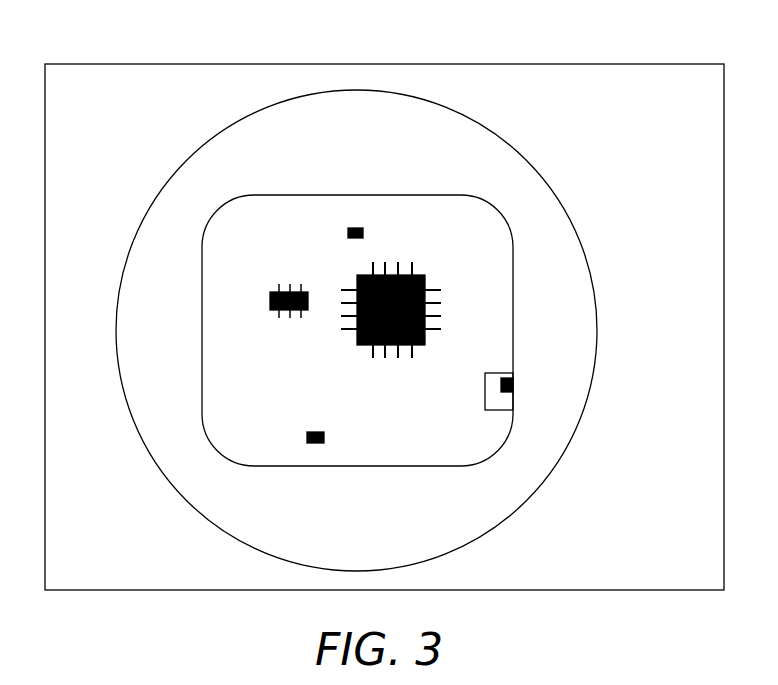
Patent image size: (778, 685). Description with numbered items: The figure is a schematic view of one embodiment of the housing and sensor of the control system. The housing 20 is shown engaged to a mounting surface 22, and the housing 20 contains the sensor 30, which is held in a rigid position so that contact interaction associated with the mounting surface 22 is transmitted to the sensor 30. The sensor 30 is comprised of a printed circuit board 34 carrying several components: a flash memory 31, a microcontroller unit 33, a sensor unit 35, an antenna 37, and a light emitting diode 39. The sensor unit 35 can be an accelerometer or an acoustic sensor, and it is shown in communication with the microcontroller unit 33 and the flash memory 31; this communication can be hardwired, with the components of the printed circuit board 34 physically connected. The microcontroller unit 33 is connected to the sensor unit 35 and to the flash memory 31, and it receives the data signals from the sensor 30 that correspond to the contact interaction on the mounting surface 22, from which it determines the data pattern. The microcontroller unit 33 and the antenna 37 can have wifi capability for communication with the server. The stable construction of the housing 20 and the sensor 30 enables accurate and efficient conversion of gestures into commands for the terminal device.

The housing 20 is at (590, 208).
The mounting surface 22 is at (113, 95).
The sensor 30 is at (208, 228).
The flash memory 31 is at (273, 310).
The microcontroller unit 33 is at (423, 275).
The printed circuit board 34 is at (540, 325).
The sensor unit 35 is at (361, 227).
The antenna 37 is at (493, 390).
The light emitting diode 39 is at (313, 443).